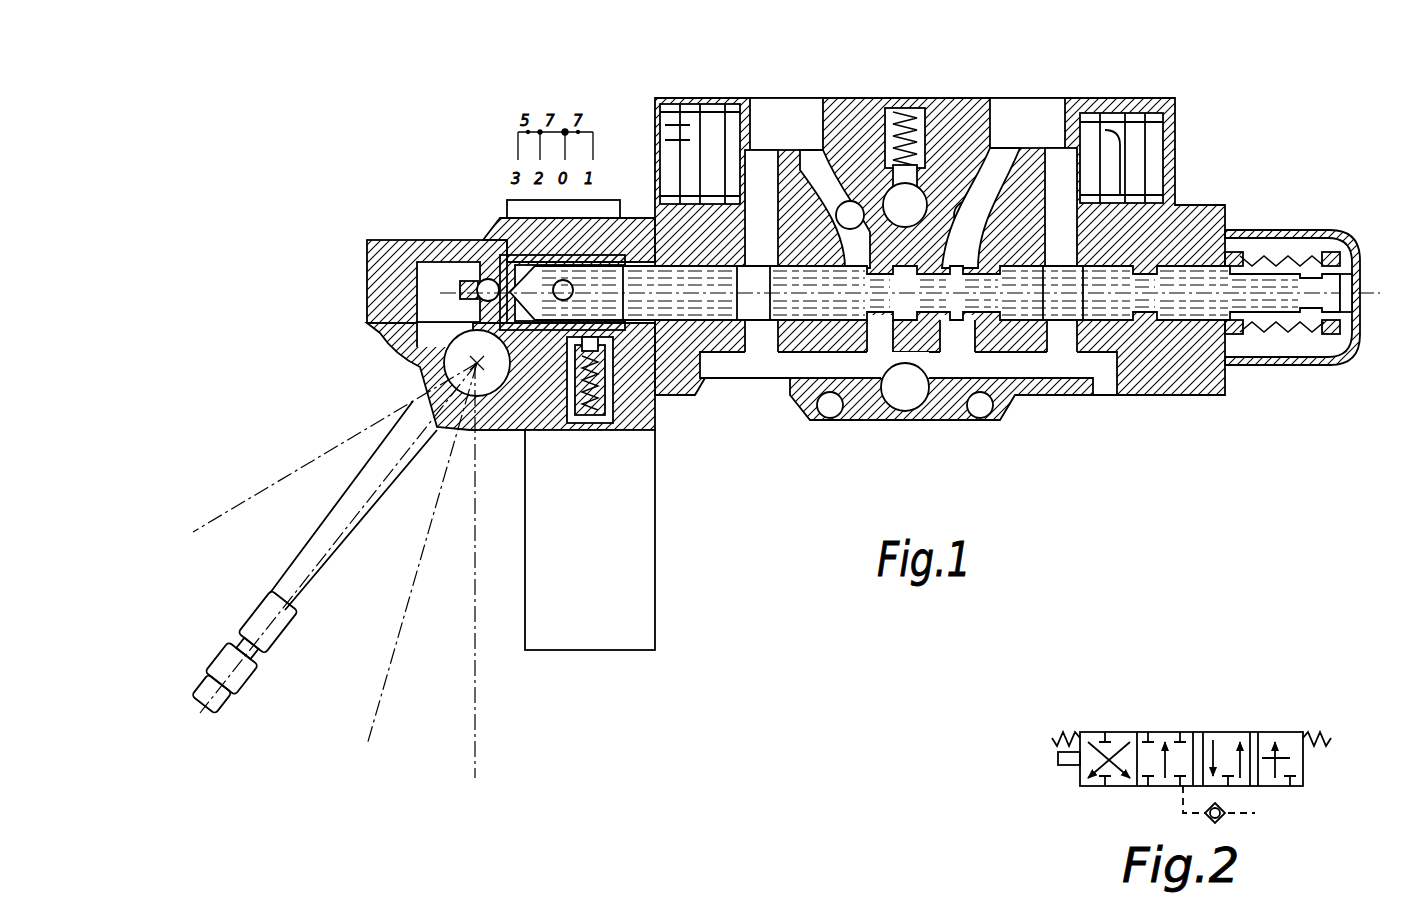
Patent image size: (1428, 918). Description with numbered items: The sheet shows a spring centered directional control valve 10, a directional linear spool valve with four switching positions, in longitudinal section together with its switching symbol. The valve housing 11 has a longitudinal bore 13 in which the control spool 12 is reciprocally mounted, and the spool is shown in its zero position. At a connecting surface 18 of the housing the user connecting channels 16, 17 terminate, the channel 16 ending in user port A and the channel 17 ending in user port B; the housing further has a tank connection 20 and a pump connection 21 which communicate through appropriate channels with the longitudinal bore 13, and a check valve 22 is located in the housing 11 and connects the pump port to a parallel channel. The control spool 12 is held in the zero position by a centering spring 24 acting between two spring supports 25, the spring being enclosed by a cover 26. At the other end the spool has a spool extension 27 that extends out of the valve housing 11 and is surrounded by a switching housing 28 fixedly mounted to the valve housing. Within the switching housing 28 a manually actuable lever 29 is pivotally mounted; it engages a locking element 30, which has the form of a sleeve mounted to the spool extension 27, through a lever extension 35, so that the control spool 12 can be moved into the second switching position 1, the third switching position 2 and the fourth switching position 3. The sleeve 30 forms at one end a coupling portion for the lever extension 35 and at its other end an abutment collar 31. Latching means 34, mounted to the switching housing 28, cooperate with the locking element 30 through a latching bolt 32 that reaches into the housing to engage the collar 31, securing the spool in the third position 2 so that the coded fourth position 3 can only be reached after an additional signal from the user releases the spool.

In FIG. 1, the directional control valve 10 is at (1243, 113).
In FIG. 2, the directional control valve 10 is at (1247, 714).
In FIG. 1, the valve housing 11 is at (1020, 398).
In FIG. 1, the control spool 12 is at (808, 298).
In FIG. 1, the longitudinal bore 13 is at (833, 318).
In FIG. 1, the user connecting channel 16 is at (812, 106).
In FIG. 1, the user connecting channel 17 is at (1000, 106).
In FIG. 1, the connecting surface 18 is at (1085, 100).
In FIG. 1, the tank connection 20 is at (912, 410).
In FIG. 1, the pump connection 21 is at (928, 188).
In FIG. 1, the check valve 22 is at (903, 112).
In FIG. 1, the centering spring 24 is at (1285, 262).
In FIG. 1, the spring supports 25 is at (1235, 350).
In FIG. 1, the cover 26 is at (1352, 318).
In FIG. 1, the spool extension 27 is at (655, 385).
In FIG. 1, the switching housing 28 is at (432, 250).
In FIG. 1, the manually actuable lever 29 is at (300, 608).
In FIG. 1, the locking element 30 is at (488, 278).
In FIG. 1, the abutment collar 31 is at (627, 255).
In FIG. 1, the latching bolt 32 is at (545, 352).
In FIG. 1, the latching means 34 is at (660, 578).
In FIG. 1, the lever extension 35 is at (466, 305).
In FIG. 1, the second switching position 1 is at (321, 462).
In FIG. 1, the third switching position 2 is at (413, 569).
In FIG. 1, the fourth switching position 3 is at (467, 584).